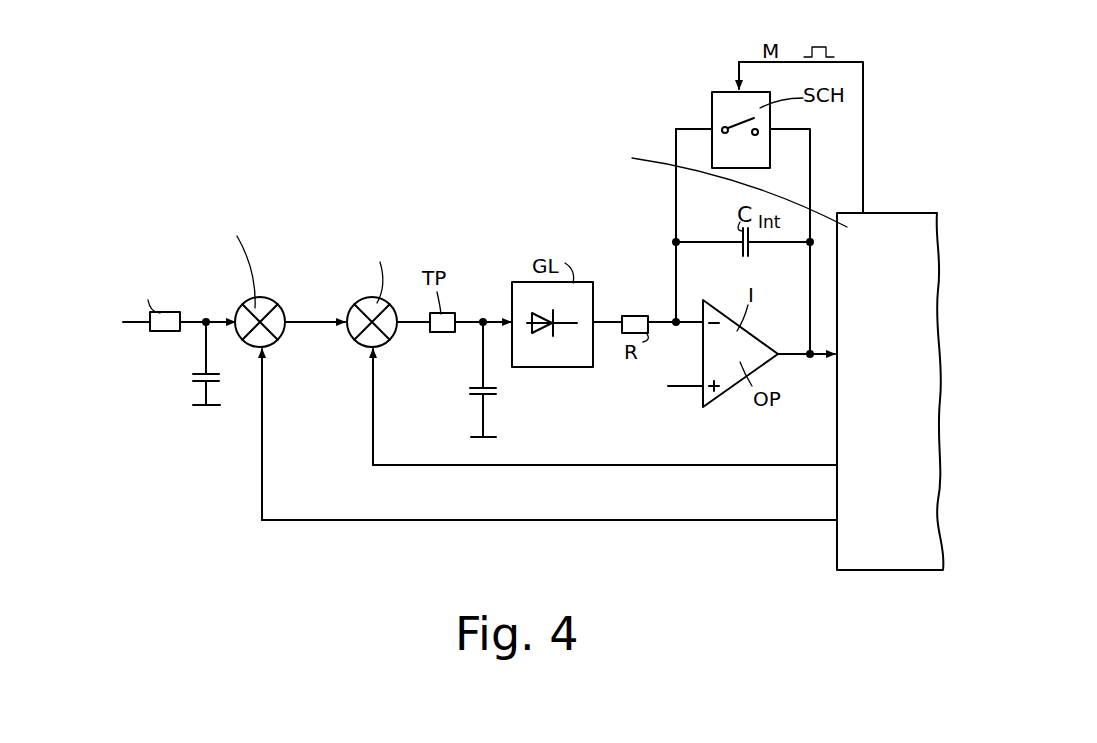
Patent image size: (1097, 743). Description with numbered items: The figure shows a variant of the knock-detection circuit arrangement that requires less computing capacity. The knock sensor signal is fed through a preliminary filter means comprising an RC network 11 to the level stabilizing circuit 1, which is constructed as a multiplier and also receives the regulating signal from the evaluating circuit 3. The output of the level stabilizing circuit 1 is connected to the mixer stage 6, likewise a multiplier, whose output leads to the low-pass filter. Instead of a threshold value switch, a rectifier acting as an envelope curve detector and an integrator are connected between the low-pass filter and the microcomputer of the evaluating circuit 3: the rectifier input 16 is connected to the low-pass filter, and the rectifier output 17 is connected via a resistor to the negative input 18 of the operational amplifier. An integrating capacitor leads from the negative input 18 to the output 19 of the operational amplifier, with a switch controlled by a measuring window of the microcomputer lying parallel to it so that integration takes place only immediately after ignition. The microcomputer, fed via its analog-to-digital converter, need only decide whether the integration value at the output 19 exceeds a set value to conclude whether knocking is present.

The level stabilizing circuit 1 is at (273, 302).
The evaluating circuit 3 is at (893, 196).
The mixer stage 6 is at (388, 287).
The RC network 11 is at (187, 346).
The input of the rectifier 16 is at (484, 320).
The output of the rectifier 17 is at (604, 320).
The negative input of the operational amplifier 18 is at (690, 324).
The output of the operational amplifier 19 is at (797, 357).